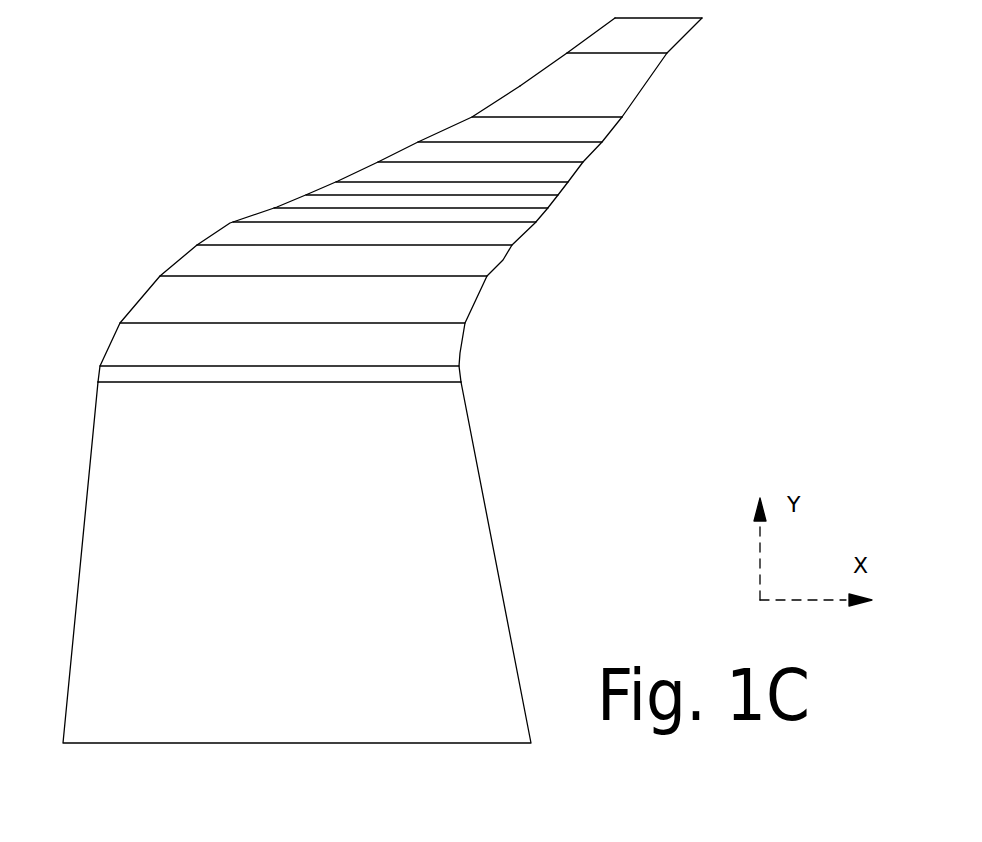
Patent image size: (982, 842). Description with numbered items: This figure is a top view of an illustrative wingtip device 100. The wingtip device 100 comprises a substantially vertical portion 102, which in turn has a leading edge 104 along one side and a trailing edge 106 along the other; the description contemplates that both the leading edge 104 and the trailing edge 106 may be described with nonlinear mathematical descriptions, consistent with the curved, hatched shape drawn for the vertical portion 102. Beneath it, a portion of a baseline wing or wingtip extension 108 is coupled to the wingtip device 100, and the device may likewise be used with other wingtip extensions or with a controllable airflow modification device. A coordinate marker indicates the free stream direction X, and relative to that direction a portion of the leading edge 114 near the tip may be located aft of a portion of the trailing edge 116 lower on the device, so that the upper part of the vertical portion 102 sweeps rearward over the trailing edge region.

The wingtip device 100 is at (406, 375).
The substantially vertical portion 102 is at (423, 188).
The leading edge 104 is at (309, 234).
The trailing edge 106 is at (604, 249).
The wingtip extension 108 is at (366, 562).
The portion of the leading edge 114 is at (581, 62).
The portion of the trailing edge 116 is at (359, 370).